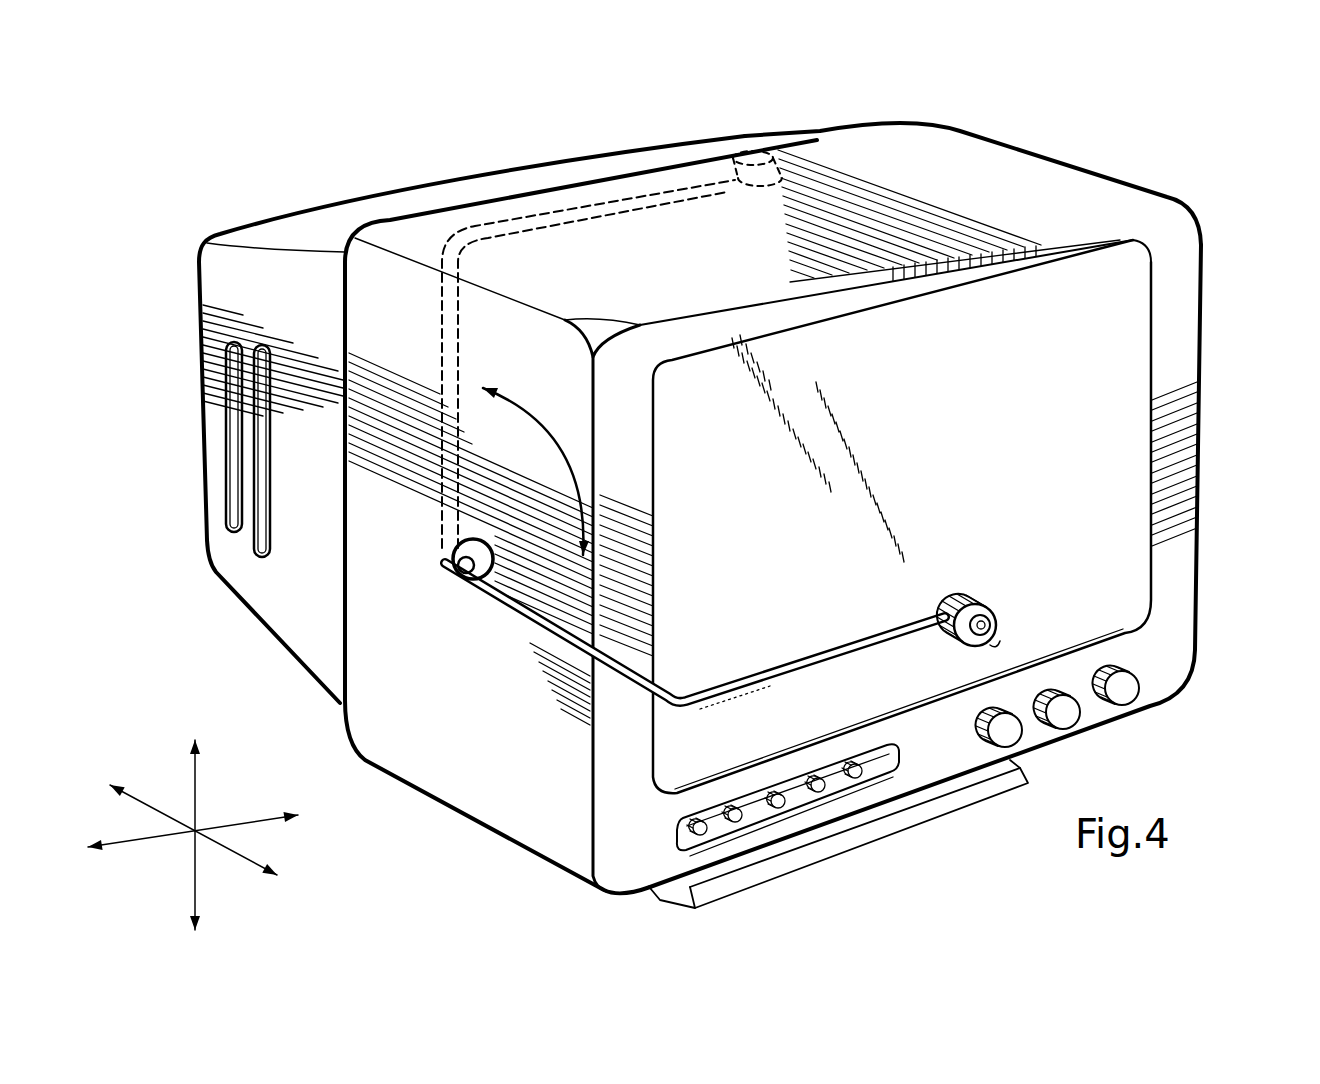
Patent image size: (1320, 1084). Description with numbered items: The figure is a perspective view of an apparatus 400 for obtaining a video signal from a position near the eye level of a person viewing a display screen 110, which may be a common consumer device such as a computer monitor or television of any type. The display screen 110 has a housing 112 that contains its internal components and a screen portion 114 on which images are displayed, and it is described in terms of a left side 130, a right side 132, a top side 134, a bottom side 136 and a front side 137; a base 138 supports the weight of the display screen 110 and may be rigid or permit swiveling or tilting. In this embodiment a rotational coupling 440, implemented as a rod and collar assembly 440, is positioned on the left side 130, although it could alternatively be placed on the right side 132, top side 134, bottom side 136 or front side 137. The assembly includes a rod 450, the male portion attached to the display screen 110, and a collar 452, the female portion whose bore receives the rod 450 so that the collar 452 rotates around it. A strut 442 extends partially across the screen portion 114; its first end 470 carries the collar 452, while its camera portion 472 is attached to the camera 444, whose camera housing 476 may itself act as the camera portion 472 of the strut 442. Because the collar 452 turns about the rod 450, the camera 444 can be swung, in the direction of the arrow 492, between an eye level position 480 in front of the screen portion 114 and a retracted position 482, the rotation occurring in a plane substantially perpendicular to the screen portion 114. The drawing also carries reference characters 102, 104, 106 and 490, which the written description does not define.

The apparatus 400 is at (1072, 122).
The display screen 110 is at (1110, 155).
The housing 112 is at (1127, 192).
The screen portion 114 is at (1127, 312).
The left side 130 is at (540, 823).
The right side 132 is at (1199, 600).
The top side 134 is at (976, 190).
The bottom side 136 is at (1083, 735).
The front side 137 is at (658, 862).
The base 138 is at (923, 808).
The rotational coupling 440 is at (437, 587).
The strut 442 is at (810, 678).
The camera 444 is at (1000, 641).
The rod 450 is at (473, 540).
The collar 452 is at (453, 552).
The first end 470 is at (527, 628).
The camera portion 472 is at (933, 607).
The camera housing 476 is at (963, 588).
The eye level position 480 is at (1005, 589).
The retracted position 482 is at (762, 202).
The ventilation slots 490 is at (213, 509).
The arrow 492 is at (541, 425).
The first axis 102 is at (237, 860).
The second axis 104 is at (222, 820).
The third axis 106 is at (198, 788).